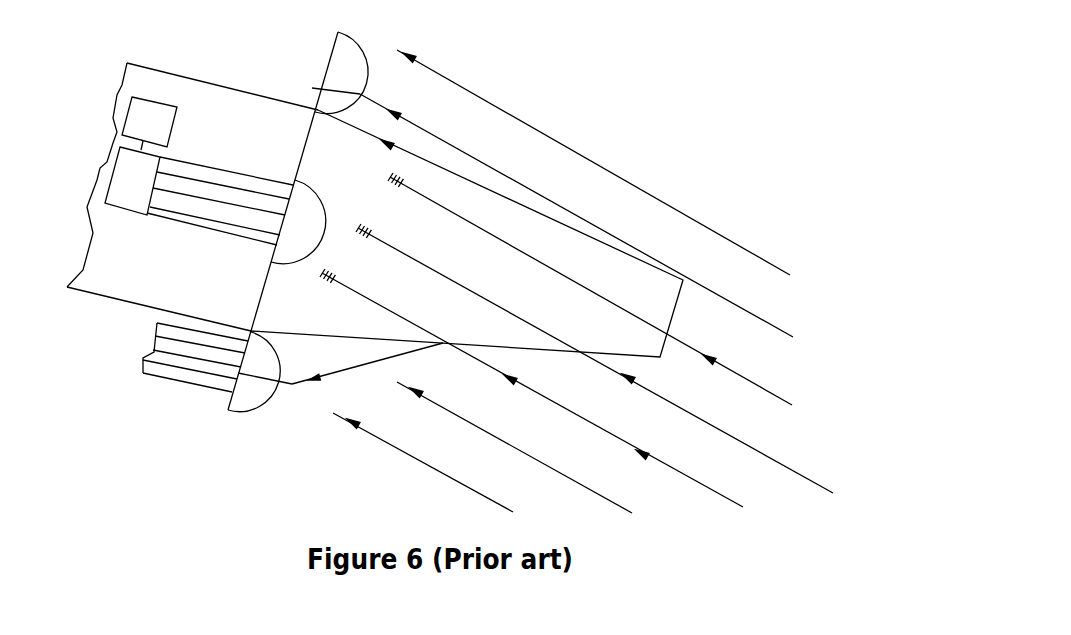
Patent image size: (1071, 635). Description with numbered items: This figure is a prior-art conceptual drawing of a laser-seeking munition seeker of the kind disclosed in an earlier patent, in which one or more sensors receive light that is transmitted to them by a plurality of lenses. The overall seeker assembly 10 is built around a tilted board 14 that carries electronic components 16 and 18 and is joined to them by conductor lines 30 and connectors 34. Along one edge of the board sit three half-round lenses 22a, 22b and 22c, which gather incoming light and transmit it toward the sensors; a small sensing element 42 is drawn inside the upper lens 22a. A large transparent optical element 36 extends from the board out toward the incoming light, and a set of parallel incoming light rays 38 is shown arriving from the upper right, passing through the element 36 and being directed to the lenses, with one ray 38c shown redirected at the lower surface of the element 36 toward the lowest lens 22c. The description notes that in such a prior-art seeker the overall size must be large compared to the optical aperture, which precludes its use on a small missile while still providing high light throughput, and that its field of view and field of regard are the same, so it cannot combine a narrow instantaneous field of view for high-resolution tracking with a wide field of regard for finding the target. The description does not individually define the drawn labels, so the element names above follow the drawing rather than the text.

The optical sensing system 10 is at (628, 88).
The circuit board 14 is at (120, 302).
The electronic component 16 is at (172, 123).
The electronic component 18 is at (123, 208).
The photodetector lens 22a is at (373, 75).
The photodetector lens 22b is at (322, 242).
The photodetector lens 22c is at (257, 408).
The conductor traces 30 is at (222, 222).
The connector 34 is at (207, 170).
The optical element 36 is at (673, 315).
The light rays 38 is at (680, 210).
The reflected light ray 38c is at (340, 372).
The detector element 42 is at (312, 88).